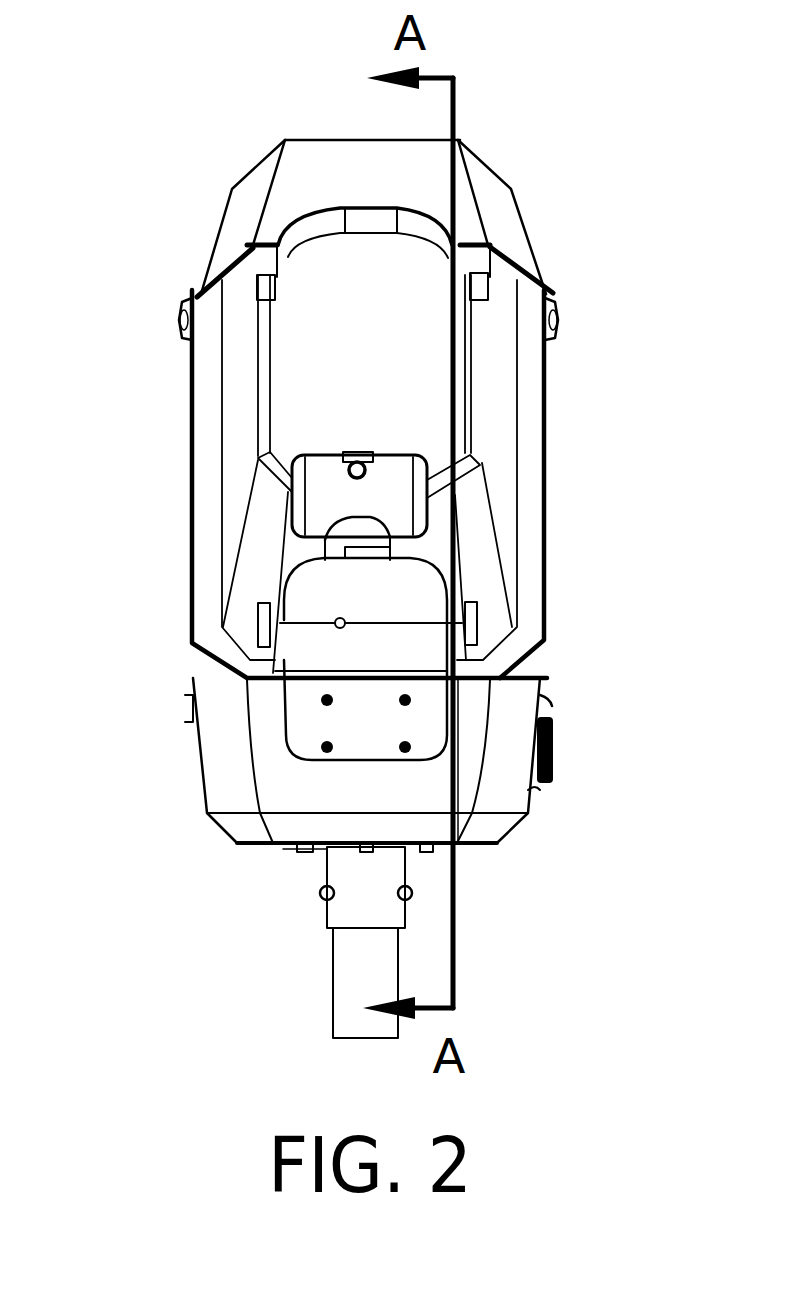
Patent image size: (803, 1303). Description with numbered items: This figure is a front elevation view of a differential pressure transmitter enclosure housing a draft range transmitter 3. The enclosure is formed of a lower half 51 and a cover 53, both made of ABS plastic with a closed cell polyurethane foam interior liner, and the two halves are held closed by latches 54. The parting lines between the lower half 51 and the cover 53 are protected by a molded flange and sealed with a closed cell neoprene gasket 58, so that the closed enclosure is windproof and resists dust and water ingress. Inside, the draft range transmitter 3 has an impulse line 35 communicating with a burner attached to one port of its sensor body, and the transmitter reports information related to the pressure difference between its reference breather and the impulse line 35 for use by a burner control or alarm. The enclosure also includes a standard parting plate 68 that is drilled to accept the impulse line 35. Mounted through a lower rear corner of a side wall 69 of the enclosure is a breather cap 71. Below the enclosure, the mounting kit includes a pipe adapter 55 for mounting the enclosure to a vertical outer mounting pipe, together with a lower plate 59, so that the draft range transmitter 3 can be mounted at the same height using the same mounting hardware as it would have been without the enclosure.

The draft range transmitter 3 is at (315, 480).
The impulse line 35 is at (336, 626).
The lower half 51 is at (273, 770).
The cover 53 is at (517, 238).
The latches 54 is at (558, 322).
The pipe adapter 55 is at (343, 903).
The gasket 58 is at (547, 455).
The lower plate 59 is at (280, 857).
The parting plate 68 is at (295, 695).
The side wall 69 is at (528, 790).
The breather cap 71 is at (553, 732).